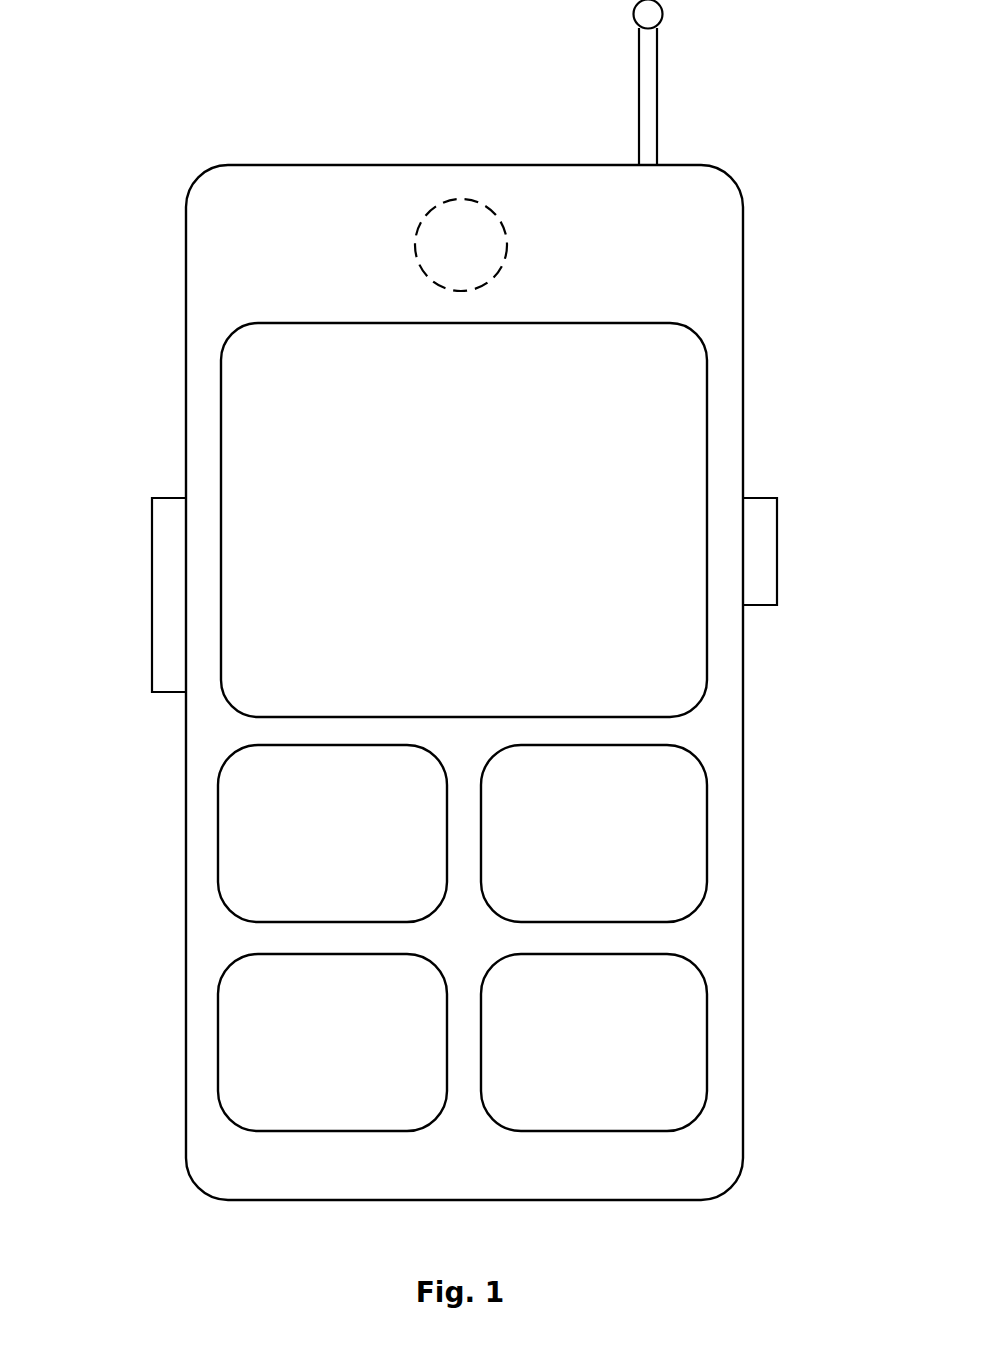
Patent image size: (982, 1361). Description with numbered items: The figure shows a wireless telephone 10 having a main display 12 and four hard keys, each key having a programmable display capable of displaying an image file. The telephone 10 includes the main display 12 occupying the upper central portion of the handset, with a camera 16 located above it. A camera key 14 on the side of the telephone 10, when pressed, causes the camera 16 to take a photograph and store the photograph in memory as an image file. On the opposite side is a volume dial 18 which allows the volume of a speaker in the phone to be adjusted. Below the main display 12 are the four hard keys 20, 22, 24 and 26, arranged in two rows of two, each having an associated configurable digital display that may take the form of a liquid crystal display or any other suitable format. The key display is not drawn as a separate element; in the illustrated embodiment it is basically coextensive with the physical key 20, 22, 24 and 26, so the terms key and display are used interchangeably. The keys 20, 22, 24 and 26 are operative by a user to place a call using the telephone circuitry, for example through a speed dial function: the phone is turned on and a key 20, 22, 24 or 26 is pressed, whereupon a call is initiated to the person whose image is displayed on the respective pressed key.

The wireless telephone 10 is at (743, 270).
The main display 12 is at (672, 437).
The camera key 14 is at (777, 568).
The camera 16 is at (417, 222).
The volume dial 18 is at (152, 570).
The hard key 20 is at (255, 830).
The hard key 22 is at (673, 830).
The hard key 24 is at (255, 1043).
The hard key 26 is at (673, 1043).